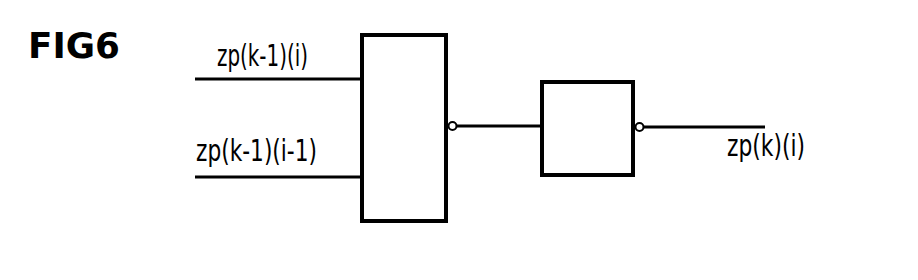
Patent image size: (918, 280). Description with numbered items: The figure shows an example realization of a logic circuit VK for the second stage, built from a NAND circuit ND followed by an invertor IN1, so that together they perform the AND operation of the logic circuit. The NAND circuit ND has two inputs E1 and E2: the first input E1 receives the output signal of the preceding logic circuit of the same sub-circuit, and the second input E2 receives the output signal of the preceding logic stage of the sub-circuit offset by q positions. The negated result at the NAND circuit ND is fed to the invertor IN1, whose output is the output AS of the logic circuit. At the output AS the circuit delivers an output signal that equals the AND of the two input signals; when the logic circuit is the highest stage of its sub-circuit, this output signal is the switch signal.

The first input E1 is at (293, 77).
The second input E2 is at (293, 175).
The NAND circuit ND is at (438, 73).
The invertor IN1 is at (560, 97).
The output AS is at (701, 110).